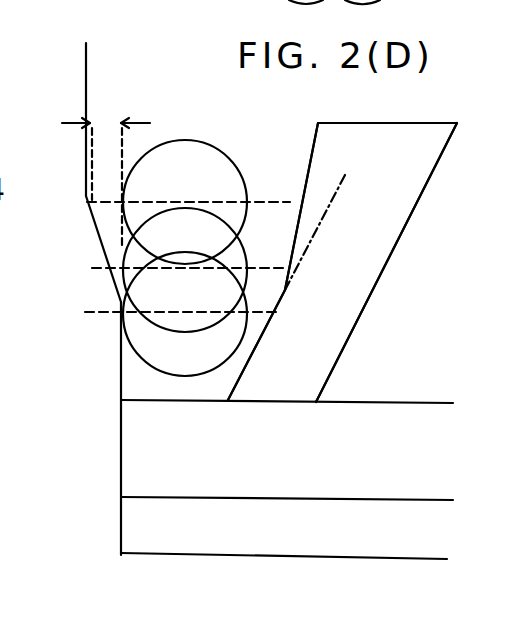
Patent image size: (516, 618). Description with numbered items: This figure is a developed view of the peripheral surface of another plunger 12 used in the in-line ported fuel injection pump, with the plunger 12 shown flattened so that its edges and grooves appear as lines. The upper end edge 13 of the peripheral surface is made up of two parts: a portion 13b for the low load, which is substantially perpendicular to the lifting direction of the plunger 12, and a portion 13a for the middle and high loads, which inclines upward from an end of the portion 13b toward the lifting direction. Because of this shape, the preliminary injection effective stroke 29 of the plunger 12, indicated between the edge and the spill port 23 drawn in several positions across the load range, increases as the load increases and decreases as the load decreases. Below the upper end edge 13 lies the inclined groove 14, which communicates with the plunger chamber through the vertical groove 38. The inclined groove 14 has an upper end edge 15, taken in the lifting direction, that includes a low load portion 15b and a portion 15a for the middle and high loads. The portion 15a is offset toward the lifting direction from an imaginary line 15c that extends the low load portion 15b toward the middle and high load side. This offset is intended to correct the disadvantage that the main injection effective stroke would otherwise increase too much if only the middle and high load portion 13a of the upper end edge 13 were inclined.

The plunger 12 is at (372, 308).
The upper end edge 13 is at (83, 68).
The portion for the middle and high loads 13a is at (89, 200).
The portion for the low load 13b is at (121, 313).
The inclined groove 14 is at (413, 167).
The upper end edge of the inclined groove 15 is at (304, 151).
The portion for the middle and high loads 15a is at (305, 180).
The low load portion 15b is at (250, 353).
The imaginary line 15c is at (323, 217).
The spill port 23 is at (198, 142).
The preliminary injection effective stroke 29 is at (108, 124).
The vertical groove 38 is at (417, 417).